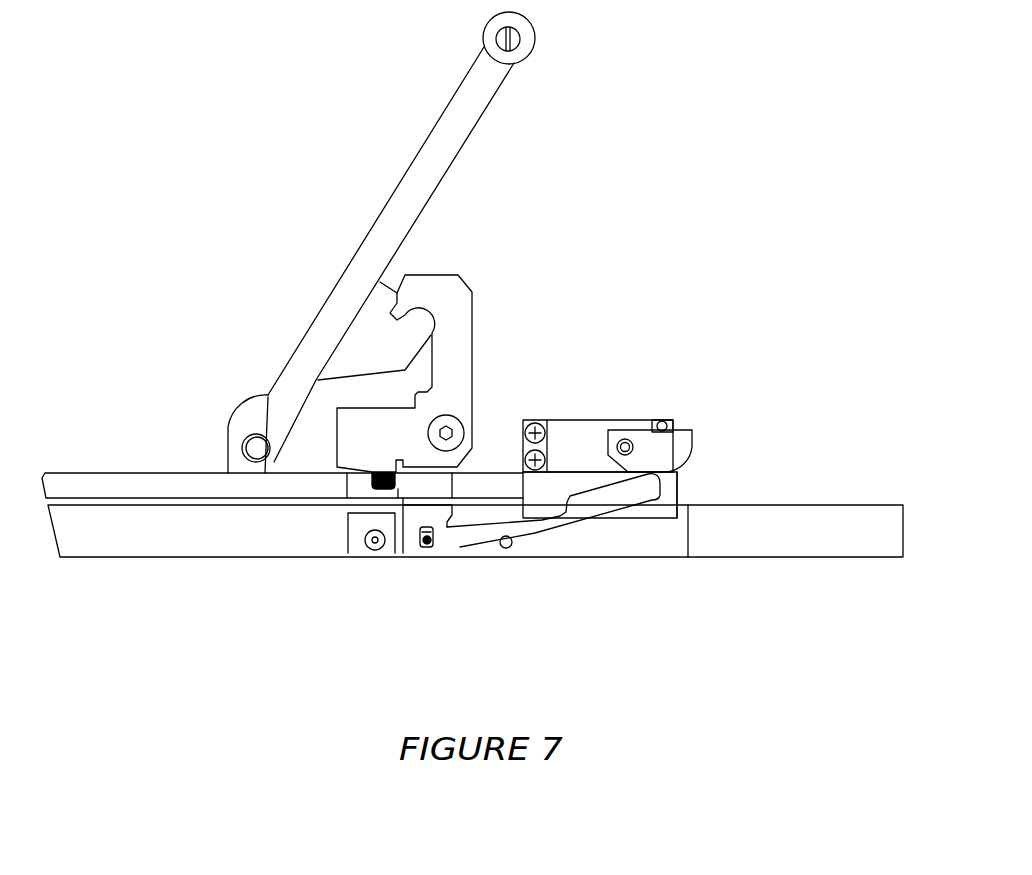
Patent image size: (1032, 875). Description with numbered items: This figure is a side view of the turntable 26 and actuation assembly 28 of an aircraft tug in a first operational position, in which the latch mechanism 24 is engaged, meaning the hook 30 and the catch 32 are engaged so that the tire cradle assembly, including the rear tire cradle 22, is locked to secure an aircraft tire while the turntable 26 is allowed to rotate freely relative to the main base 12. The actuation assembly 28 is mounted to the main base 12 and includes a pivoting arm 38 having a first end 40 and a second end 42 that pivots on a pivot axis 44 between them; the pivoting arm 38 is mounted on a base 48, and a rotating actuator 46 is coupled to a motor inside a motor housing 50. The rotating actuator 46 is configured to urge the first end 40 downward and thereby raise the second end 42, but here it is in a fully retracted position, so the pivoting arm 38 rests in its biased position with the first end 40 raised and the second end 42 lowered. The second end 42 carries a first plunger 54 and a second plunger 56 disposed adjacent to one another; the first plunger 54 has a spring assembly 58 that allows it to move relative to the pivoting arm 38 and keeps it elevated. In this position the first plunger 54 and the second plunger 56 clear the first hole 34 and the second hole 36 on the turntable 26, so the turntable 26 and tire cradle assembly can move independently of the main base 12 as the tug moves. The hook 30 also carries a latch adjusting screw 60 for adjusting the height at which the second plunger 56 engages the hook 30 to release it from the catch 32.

The main base 12 is at (220, 535).
The rear tire cradle 22 is at (460, 152).
The latch mechanism 24 is at (456, 352).
The turntable 26 is at (207, 486).
The actuation assembly 28 is at (651, 467).
The hook 30 is at (448, 373).
The catch 32 is at (355, 368).
The first hole 34 is at (428, 487).
The second hole 36 is at (358, 487).
The pivoting arm 38 is at (555, 527).
The first end 40 is at (632, 497).
The second end 42 is at (406, 572).
The pivot axis 44 is at (507, 548).
The rotating actuator 46 is at (653, 465).
The base 48 is at (678, 491).
The motor housing 50 is at (553, 463).
The first plunger 54 is at (440, 522).
The second plunger 56 is at (353, 543).
The spring assembly 58 is at (428, 548).
The latch adjusting screw 60 is at (400, 475).